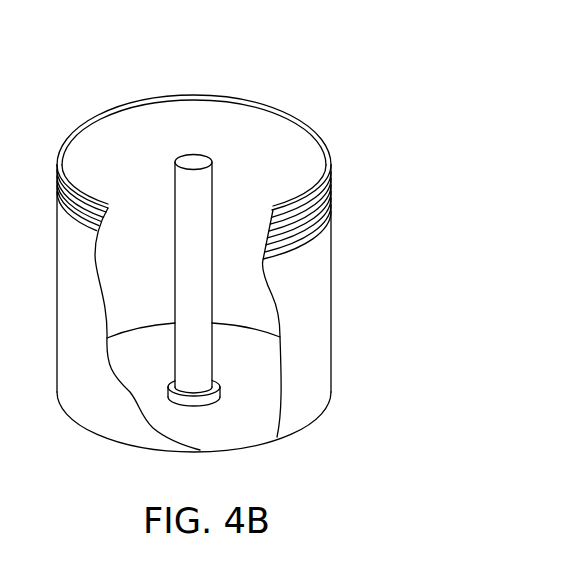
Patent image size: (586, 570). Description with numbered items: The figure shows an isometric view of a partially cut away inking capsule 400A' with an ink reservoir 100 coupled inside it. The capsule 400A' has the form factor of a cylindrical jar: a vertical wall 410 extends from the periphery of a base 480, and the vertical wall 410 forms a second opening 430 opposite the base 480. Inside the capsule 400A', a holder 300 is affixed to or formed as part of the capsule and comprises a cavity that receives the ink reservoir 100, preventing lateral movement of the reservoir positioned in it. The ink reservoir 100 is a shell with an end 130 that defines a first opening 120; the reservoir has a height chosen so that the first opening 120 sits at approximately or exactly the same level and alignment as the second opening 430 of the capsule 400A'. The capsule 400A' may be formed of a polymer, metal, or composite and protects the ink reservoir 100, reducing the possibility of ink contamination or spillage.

The inking capsule 400A' is at (295, 245).
The vertical wall 410 is at (331, 300).
The second opening 430 is at (83, 125).
The base 480 is at (298, 431).
The end 130 is at (222, 141).
The ink reservoir 100 is at (213, 183).
The first opening 120 is at (178, 155).
The holder 300 is at (221, 394).